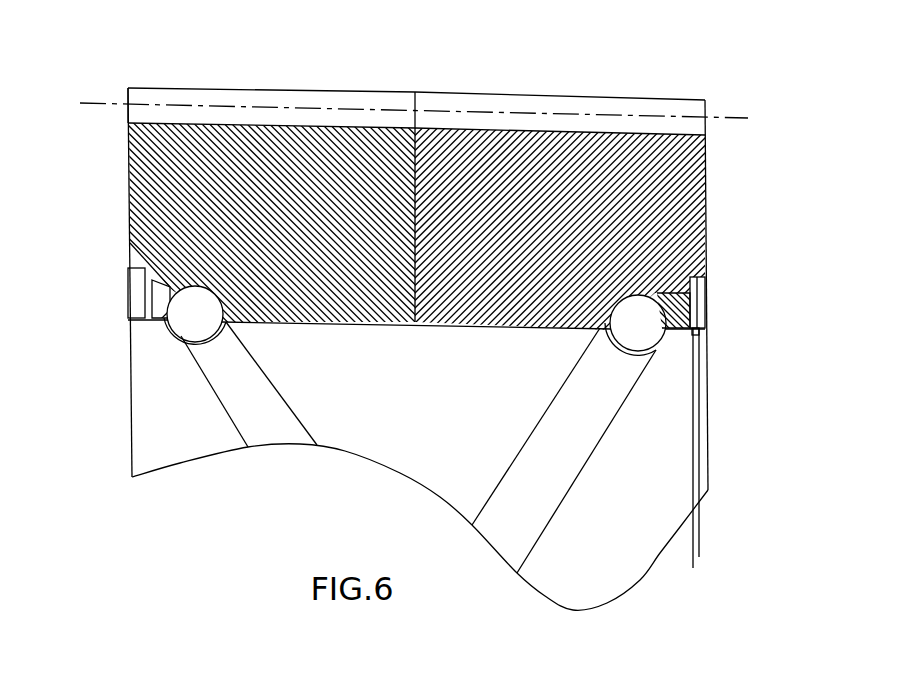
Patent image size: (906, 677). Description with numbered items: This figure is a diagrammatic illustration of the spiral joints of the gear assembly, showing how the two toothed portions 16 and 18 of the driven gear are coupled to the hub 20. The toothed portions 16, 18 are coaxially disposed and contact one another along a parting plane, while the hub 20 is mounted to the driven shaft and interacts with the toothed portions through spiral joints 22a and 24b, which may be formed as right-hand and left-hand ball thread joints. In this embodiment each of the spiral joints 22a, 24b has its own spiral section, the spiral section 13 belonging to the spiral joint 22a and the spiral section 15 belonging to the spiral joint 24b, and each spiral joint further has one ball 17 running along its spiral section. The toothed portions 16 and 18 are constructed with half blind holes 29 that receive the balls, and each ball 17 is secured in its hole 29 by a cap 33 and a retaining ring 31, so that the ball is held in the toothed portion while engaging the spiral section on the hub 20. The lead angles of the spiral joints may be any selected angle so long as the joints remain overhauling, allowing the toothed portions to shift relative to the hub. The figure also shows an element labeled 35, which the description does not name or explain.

The toothed portion 16 is at (128, 107).
The toothed portion 18 is at (705, 125).
The half blind hole 29 is at (128, 182).
The retaining ring 31 is at (128, 245).
The cap 33 is at (150, 298).
The ball 17 is at (190, 317).
The spiral section 13 is at (196, 365).
The spiral joint 22a is at (235, 400).
The right seal and retainer 35 is at (705, 313).
The spiral section 15 is at (628, 352).
The spiral joint 24b is at (567, 428).
The hub 20 is at (443, 393).